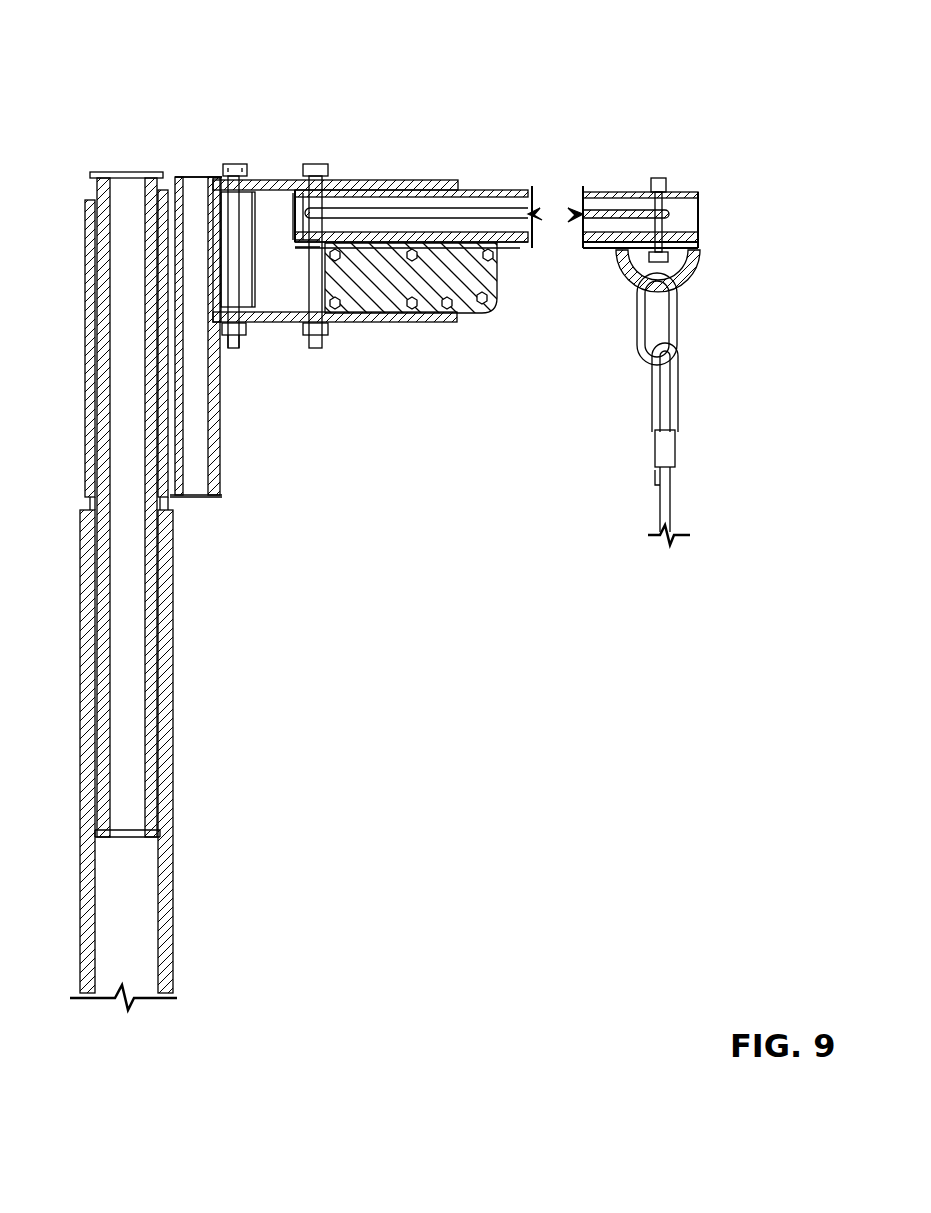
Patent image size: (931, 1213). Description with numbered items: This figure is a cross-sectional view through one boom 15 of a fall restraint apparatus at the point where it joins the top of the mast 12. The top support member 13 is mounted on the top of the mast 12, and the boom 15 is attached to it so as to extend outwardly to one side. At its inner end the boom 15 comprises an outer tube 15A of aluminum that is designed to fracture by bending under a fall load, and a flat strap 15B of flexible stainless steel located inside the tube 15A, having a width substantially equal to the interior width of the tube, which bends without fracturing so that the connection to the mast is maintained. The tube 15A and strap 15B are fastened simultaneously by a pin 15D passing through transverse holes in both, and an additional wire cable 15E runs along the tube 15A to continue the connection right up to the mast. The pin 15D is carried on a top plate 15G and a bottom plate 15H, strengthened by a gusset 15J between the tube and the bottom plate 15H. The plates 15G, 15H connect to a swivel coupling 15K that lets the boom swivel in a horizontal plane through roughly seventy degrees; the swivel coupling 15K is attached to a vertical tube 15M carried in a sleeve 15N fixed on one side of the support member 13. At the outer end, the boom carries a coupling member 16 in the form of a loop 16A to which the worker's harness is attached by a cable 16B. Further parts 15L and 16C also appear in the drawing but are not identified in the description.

The mast 12 is at (173, 885).
The top support member 13 is at (170, 503).
The boom 15 is at (418, 360).
The outer tube 15A is at (503, 195).
The flat strap 15B is at (490, 243).
The pin 15D is at (325, 202).
The wire cable 15E is at (417, 207).
The top plate 15G is at (262, 190).
The bottom plate 15H is at (275, 323).
The gusset 15J is at (355, 305).
The swivel coupling 15K is at (253, 112).
The bolt 15L is at (232, 348).
The vertical tube 15M is at (183, 187).
The sleeve 15N is at (220, 465).
The coupling member 16 is at (676, 333).
The loop 16A is at (698, 296).
The cable 16B is at (678, 385).
The rope 16C is at (692, 483).